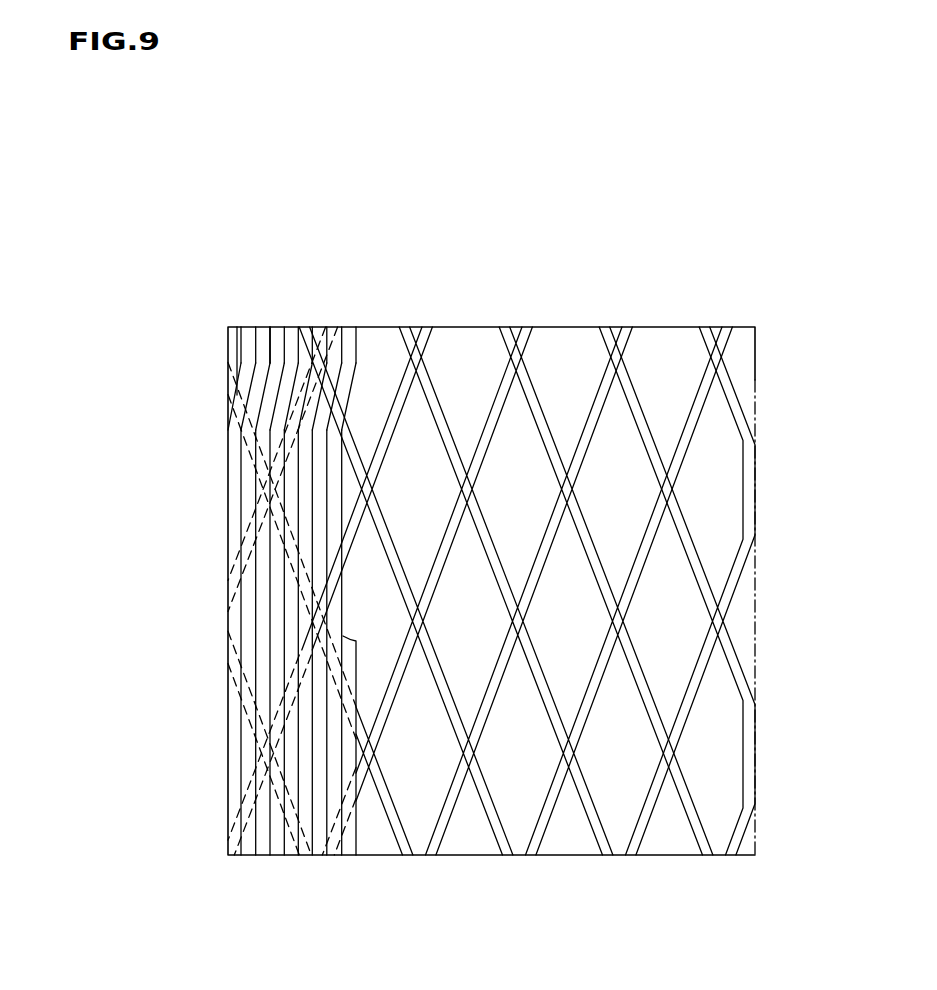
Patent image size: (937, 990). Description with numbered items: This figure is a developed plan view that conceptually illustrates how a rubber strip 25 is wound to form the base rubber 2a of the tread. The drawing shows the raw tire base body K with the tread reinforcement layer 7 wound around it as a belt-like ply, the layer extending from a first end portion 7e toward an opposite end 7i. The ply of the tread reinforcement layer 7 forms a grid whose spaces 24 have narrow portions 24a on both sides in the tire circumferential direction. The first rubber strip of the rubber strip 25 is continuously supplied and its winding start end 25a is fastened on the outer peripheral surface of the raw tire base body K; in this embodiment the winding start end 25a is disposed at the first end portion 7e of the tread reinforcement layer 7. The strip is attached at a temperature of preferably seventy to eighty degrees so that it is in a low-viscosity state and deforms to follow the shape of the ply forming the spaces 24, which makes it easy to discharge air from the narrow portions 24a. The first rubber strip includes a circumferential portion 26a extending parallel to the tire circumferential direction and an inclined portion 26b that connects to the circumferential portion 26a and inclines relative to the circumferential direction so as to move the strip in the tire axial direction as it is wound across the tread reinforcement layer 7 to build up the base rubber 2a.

The tread reinforcement layer 7 is at (504, 327).
The inner end of carcass ply 7i is at (755, 362).
The first end portion 7e is at (226, 358).
The narrow portion 24a is at (368, 530).
The raw tire base body K is at (654, 322).
The space 24 is at (380, 647).
The rubber strip 25 is at (152, 547).
The winding start end 25a is at (240, 404).
The circumferential portion 26a is at (236, 522).
The inclined portion 26b is at (268, 400).
The base rubber 2a is at (268, 327).